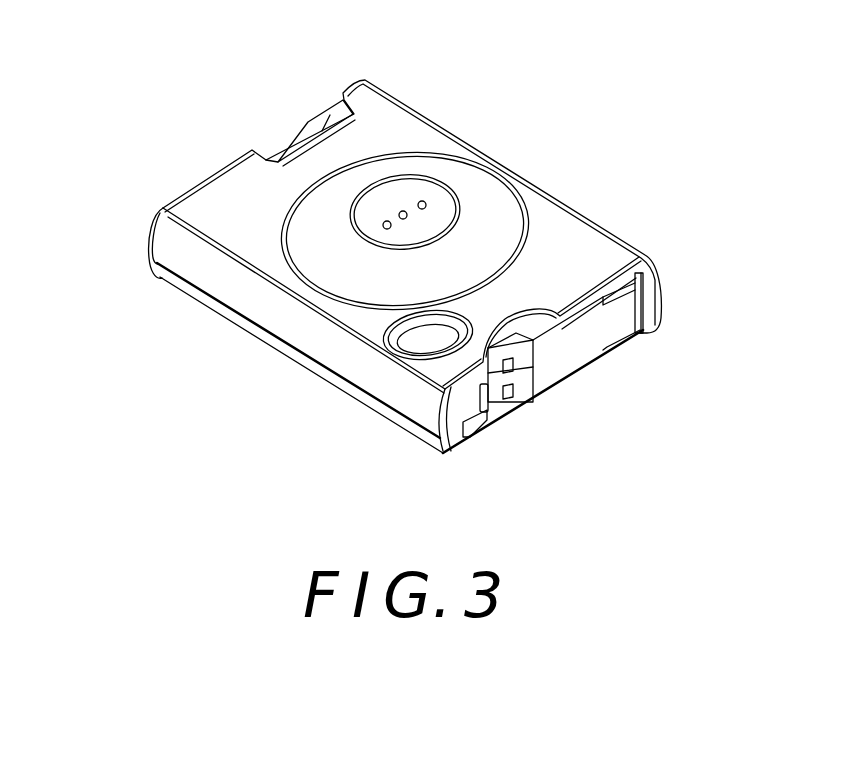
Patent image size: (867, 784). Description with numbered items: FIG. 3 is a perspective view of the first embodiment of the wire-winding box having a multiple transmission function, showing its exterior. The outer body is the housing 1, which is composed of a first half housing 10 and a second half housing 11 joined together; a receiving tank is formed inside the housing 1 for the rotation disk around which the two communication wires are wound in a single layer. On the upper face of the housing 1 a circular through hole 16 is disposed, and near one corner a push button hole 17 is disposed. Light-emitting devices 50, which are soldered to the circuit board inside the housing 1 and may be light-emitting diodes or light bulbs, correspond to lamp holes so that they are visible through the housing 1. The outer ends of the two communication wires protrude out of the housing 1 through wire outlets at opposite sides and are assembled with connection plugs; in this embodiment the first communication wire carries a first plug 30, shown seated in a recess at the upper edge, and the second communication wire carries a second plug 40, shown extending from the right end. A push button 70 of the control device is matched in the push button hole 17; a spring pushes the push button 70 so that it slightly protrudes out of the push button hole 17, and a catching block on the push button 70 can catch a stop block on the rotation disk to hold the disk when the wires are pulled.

The housing 1 is at (674, 241).
The first half housing 10 is at (450, 160).
The second half housing 11 is at (277, 343).
The circular through hole 16 is at (457, 194).
The push button hole 17 is at (427, 337).
The first plug 30 is at (288, 147).
The second plug 40 is at (550, 365).
The light-emitting devices 50 is at (383, 225).
The push button 70 is at (486, 406).